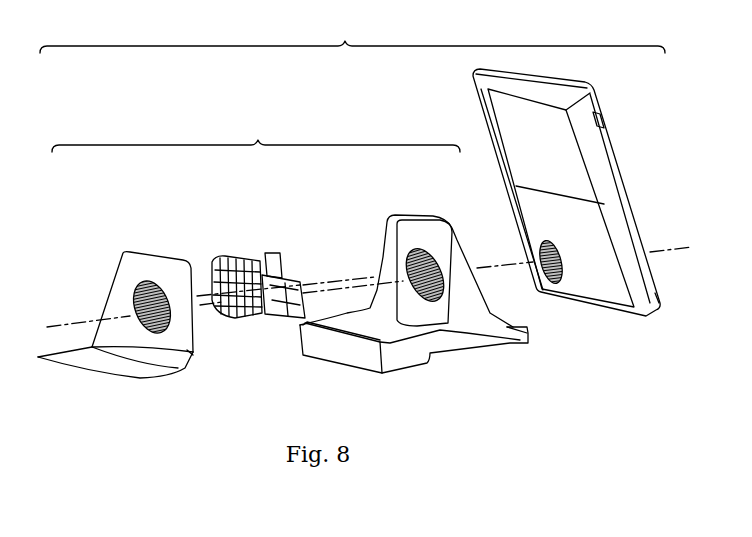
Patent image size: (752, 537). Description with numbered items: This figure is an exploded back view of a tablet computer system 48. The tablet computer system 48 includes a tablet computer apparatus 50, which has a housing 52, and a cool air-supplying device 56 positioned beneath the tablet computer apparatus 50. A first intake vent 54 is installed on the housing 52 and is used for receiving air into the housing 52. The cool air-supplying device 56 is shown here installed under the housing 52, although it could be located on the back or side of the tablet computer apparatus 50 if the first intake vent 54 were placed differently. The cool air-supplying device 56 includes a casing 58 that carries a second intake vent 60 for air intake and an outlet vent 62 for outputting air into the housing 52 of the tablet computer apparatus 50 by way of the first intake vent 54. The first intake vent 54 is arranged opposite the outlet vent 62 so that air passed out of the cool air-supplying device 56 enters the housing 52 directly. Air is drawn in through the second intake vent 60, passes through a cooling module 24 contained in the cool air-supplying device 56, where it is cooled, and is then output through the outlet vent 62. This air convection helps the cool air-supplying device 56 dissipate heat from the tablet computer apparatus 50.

The cooling module 24 is at (235, 257).
The tablet computer system 48 is at (352, 36).
The tablet computer apparatus 50 is at (593, 100).
The housing 52 is at (516, 152).
The first intake vent 54 is at (535, 256).
The cool air-supplying device 56 is at (256, 134).
The casing 58 is at (193, 355).
The second intake vent 60 is at (130, 292).
The outlet vent 62 is at (398, 259).